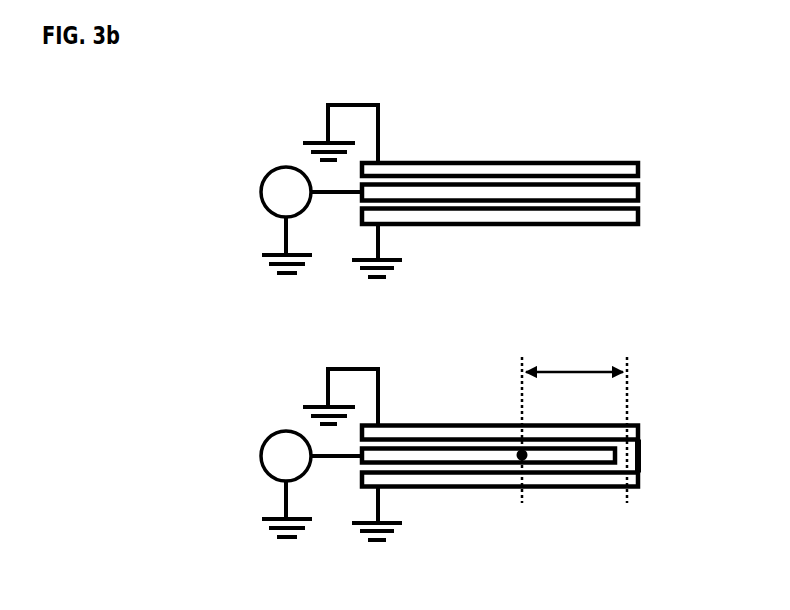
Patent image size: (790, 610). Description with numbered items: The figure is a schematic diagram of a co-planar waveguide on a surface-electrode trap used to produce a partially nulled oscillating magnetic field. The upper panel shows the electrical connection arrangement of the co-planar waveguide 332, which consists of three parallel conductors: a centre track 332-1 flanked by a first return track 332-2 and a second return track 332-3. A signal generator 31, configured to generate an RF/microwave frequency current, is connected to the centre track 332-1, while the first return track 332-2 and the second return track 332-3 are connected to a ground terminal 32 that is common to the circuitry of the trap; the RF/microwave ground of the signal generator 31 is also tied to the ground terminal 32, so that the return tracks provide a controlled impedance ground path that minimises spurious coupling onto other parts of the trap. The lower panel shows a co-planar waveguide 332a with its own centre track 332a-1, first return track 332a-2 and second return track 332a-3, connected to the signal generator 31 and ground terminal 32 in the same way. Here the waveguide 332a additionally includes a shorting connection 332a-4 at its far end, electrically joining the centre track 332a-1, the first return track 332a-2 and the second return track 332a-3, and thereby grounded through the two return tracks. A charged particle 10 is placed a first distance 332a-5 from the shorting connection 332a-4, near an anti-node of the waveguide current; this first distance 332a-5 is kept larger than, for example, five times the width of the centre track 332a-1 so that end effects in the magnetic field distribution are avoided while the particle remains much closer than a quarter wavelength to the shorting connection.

The charged particle 10 is at (530, 459).
The signal generator 31 is at (268, 174).
The ground terminal 32 is at (318, 143).
The co-planar waveguide 332 is at (544, 178).
The centre track 332-1 is at (640, 192).
The first return track 332-2 is at (587, 164).
The second return track 332-3 is at (638, 222).
The co-planar waveguide 332a is at (517, 423).
The centre track 332a-1 is at (360, 456).
The first return track 332a-2 is at (413, 427).
The second return track 332a-3 is at (428, 489).
The shorting connection 332a-4 is at (641, 476).
The first distance 332a-5 is at (574, 427).